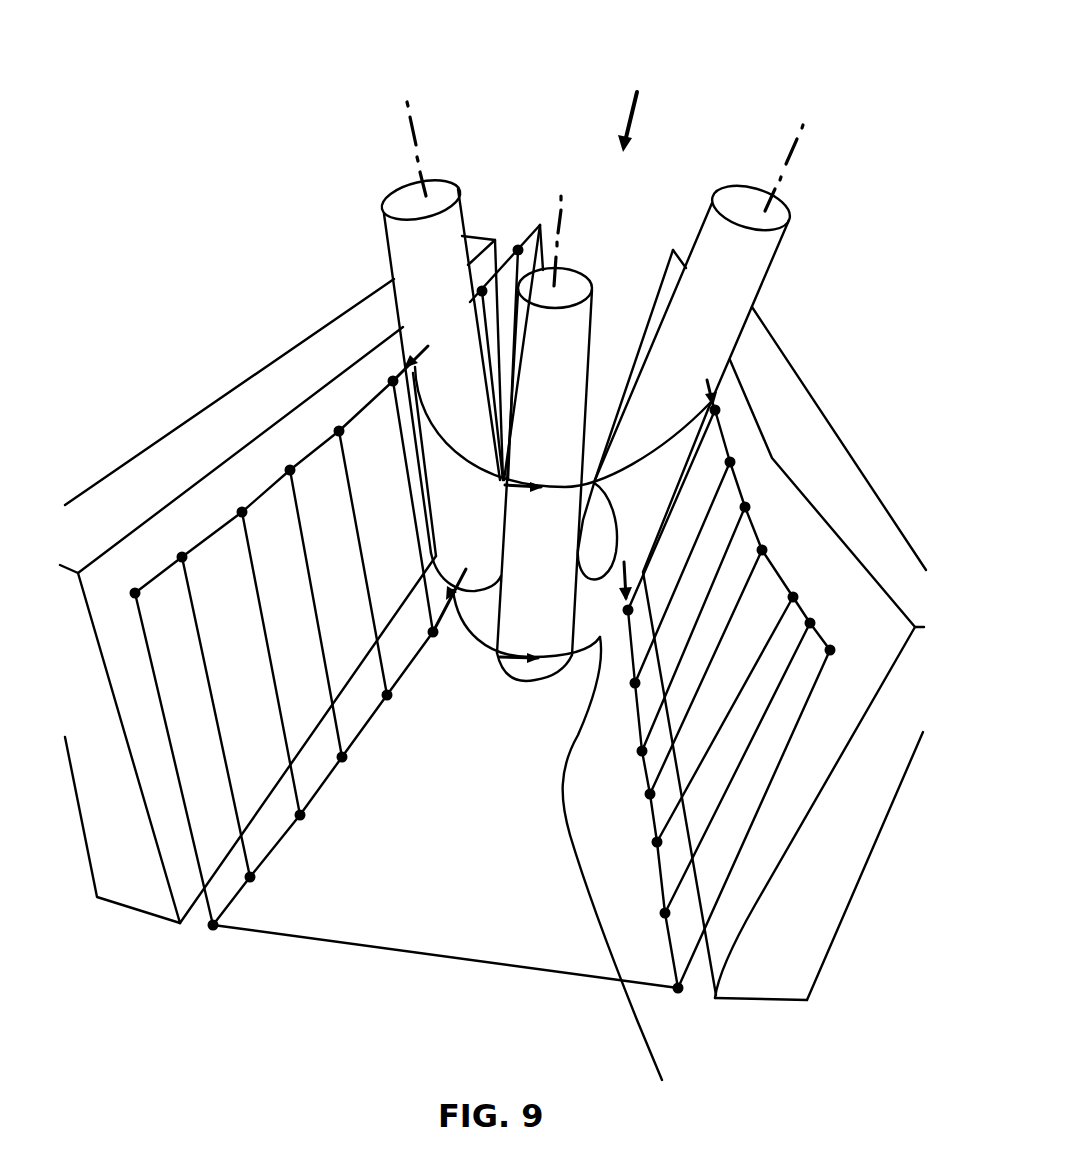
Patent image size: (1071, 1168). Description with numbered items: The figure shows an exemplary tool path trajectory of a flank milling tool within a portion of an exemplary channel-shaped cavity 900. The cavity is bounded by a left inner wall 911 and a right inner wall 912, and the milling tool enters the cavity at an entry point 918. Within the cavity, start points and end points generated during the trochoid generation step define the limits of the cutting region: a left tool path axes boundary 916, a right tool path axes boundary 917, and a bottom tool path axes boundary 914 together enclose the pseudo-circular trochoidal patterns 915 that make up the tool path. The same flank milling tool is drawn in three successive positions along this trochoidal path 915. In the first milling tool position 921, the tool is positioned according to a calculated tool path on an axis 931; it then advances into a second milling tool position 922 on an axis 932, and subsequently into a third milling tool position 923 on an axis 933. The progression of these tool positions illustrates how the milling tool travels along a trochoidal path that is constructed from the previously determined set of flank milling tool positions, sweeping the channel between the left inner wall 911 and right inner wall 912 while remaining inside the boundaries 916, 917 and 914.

The channel-shaped cavity 900 is at (477, 508).
The left inner wall 911 is at (764, 458).
The right inner wall 912 is at (320, 417).
The bottom tool path axes boundary 914 is at (403, 953).
The pseudo-circular trochoidal patterns 915 is at (623, 842).
The left tool path axes boundary 916 is at (786, 577).
The right tool path axes boundary 917 is at (200, 540).
The entry point 918 is at (632, 110).
The first milling tool position 921 is at (390, 253).
The second milling tool position 922 is at (592, 323).
The third milling tool position 923 is at (764, 283).
The axis 931 is at (413, 133).
The axis 932 is at (561, 230).
The axis 933 is at (793, 157).